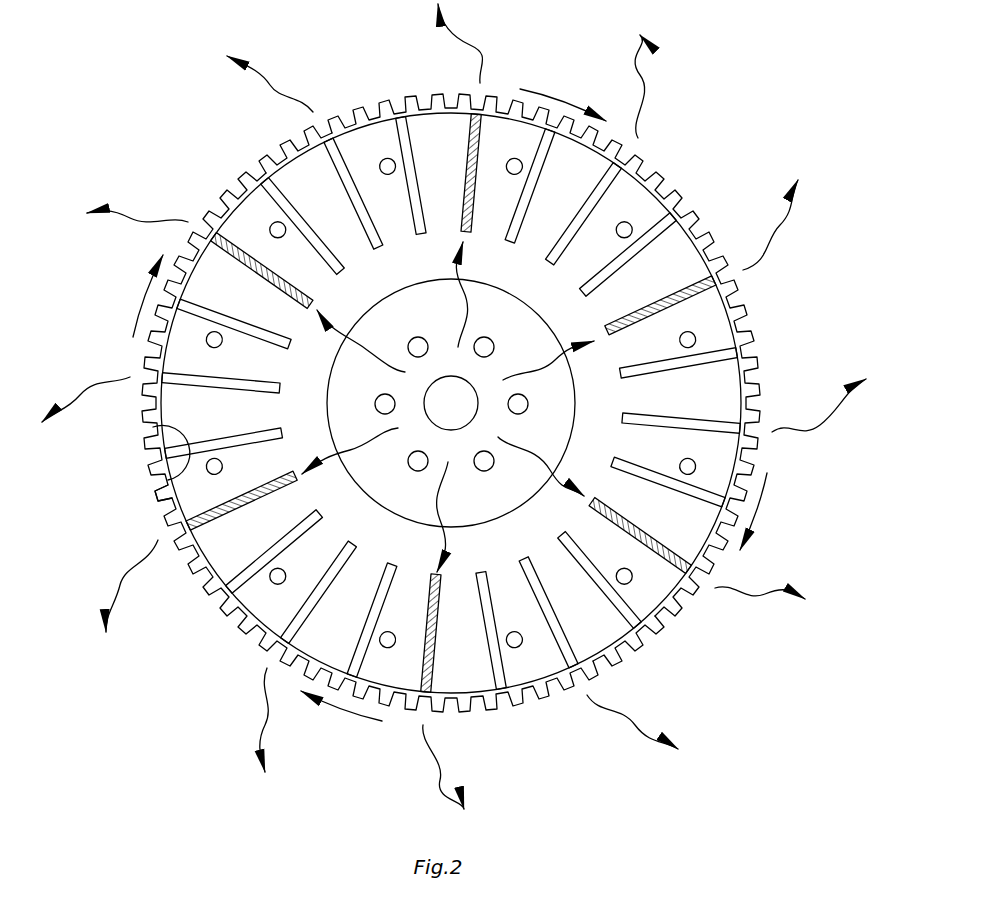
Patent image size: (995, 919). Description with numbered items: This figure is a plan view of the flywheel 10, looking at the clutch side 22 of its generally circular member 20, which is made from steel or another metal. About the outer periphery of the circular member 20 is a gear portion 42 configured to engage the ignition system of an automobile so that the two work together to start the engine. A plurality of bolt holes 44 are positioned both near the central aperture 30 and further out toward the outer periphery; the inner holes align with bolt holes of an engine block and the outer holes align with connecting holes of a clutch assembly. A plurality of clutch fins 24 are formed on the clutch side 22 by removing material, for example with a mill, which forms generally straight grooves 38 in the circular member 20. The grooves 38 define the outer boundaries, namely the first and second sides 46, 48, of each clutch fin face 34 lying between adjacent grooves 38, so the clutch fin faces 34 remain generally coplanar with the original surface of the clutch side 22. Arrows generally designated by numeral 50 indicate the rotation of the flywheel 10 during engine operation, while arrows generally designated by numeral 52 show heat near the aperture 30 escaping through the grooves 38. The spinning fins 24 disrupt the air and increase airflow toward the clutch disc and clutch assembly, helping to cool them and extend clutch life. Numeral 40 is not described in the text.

The flywheel 10 is at (702, 136).
The circular member 20 is at (440, 143).
The clutch side 22 is at (430, 403).
The clutch fins 24 is at (705, 403).
The aperture 30 is at (430, 390).
The clutch fin face 34 is at (687, 385).
The grooves 38 is at (483, 403).
The gear tooth 40 is at (625, 647).
The gear portion 42 is at (282, 142).
The bolt holes 44 is at (267, 227).
The first side 46 is at (153, 428).
The second side 48 is at (157, 483).
The arrows designating rotation 50 is at (143, 297).
The arrows designating heat escape 52 is at (437, 637).